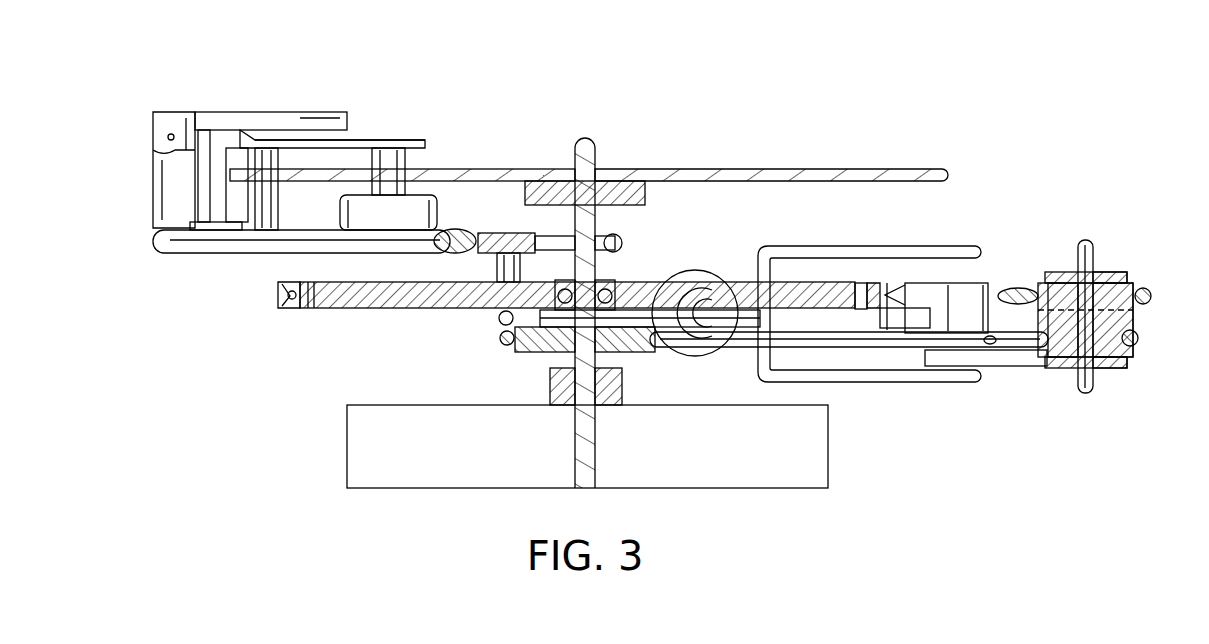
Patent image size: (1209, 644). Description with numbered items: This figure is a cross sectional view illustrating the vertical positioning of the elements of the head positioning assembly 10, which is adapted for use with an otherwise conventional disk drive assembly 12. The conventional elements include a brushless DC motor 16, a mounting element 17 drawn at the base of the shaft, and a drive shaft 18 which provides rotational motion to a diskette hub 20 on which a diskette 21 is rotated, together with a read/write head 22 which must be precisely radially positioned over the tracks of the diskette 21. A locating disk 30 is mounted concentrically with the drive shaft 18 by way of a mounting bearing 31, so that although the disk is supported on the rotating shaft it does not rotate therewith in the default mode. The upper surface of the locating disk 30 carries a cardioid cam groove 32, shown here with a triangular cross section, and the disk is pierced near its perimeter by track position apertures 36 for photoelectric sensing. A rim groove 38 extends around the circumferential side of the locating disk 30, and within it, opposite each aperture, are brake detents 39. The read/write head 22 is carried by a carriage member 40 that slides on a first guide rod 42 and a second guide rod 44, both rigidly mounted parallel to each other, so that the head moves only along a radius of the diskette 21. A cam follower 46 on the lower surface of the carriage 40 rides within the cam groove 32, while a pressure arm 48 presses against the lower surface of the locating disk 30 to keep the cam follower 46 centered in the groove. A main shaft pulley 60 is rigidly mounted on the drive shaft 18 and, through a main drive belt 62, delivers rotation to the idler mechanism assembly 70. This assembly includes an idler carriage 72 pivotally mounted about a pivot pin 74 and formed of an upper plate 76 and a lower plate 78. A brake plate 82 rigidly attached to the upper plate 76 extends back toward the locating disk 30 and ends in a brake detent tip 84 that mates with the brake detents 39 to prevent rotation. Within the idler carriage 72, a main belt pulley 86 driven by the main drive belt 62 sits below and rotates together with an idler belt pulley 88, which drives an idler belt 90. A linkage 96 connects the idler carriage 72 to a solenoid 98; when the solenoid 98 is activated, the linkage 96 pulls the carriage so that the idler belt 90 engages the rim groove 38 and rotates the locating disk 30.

The head positioning assembly 10 is at (90, 176).
The disk drive assembly 12 is at (505, 80).
The brushless DC motor 16 is at (711, 466).
The bushing 17 is at (550, 385).
The drive shaft 18 is at (592, 150).
The diskette hub 20 is at (624, 192).
The diskette 21 is at (715, 175).
The read/write head 22 is at (405, 183).
The locating disk 30 is at (802, 275).
The mounting bearing 31 is at (618, 285).
The cardioid cam groove 32 is at (437, 282).
The track position apertures 36 is at (313, 312).
The rim groove 38 is at (280, 296).
The brake detents 39 is at (292, 310).
The carriage member 40 is at (480, 232).
The first guide rod 42 is at (213, 238).
The second guide rod 44 is at (618, 243).
The cam follower 46 is at (497, 270).
The pressure arm 48 is at (499, 318).
The main shaft pulley 60 is at (532, 347).
The main drive belt 62 is at (499, 338).
The idler mechanism assembly 70 is at (1157, 264).
The idler carriage 72 is at (1068, 385).
The pivot pin 74 is at (1088, 245).
The upper plate 76 is at (1105, 272).
The lower plate 78 is at (1108, 368).
The brake plate 82 is at (965, 300).
The brake detent tip 84 is at (890, 330).
The main belt pulley 86 is at (1097, 378).
The idler belt pulley 88 is at (1065, 283).
The idler belt 90 is at (1028, 288).
The linkage 96 is at (915, 250).
The solenoid 98 is at (688, 272).